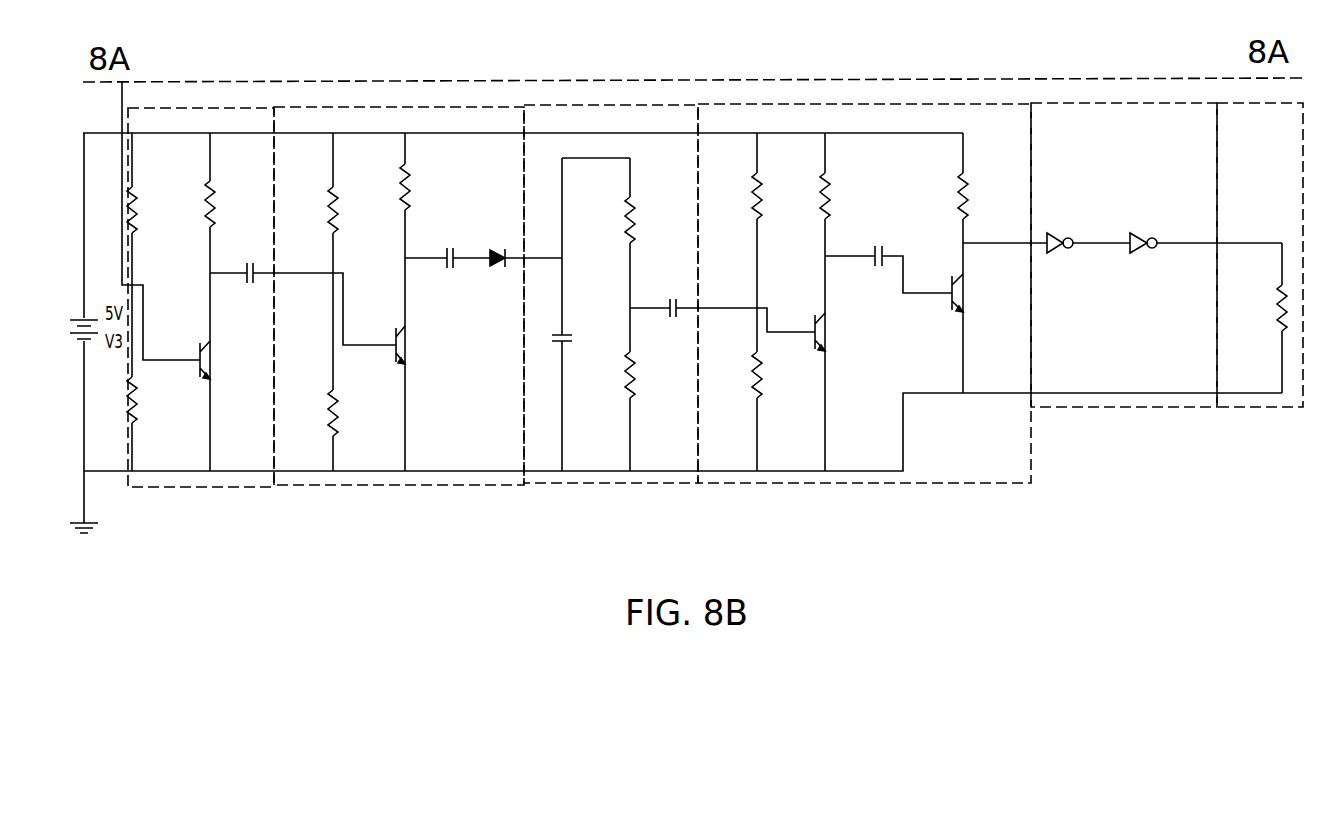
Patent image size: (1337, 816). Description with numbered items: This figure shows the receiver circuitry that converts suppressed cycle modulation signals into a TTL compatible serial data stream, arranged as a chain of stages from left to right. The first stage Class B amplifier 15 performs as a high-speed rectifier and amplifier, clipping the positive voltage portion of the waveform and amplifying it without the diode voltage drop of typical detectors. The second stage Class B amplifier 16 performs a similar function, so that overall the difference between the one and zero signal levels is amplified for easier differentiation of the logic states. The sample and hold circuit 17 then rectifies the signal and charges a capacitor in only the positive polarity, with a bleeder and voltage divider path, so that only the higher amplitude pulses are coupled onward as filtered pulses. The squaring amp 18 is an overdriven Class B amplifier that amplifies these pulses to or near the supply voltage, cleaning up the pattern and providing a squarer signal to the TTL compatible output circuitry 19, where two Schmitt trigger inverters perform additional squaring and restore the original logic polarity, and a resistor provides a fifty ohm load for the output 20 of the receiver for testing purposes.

The first stage Class B amplifier 15 is at (218, 493).
The second stage Class B amplifier 16 is at (458, 493).
The sample and hold circuit 17 is at (628, 490).
The squaring amp 18 is at (963, 490).
The TTL compatible output circuitry 19 is at (1130, 413).
The output 20 is at (1250, 413).